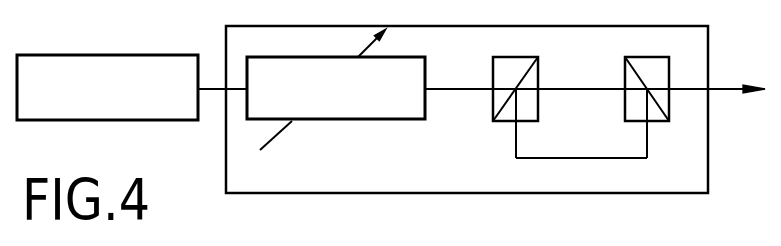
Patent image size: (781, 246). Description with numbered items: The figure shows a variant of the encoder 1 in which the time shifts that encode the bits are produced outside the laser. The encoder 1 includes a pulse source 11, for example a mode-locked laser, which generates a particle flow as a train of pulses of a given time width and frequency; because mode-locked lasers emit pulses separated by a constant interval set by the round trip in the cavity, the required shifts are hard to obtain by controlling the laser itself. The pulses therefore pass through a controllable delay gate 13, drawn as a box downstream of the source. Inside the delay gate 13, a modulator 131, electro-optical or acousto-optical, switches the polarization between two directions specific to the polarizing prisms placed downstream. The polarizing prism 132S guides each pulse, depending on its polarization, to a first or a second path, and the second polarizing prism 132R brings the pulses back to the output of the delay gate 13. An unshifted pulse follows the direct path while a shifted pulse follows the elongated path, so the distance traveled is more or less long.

The encoder 1 is at (196, 185).
The pulse source 11 is at (124, 101).
The controllable delay gate 13 is at (483, 55).
The modulator 131 is at (355, 100).
The polarizing prism 132S is at (498, 125).
The second polarizing prism 132R is at (662, 126).